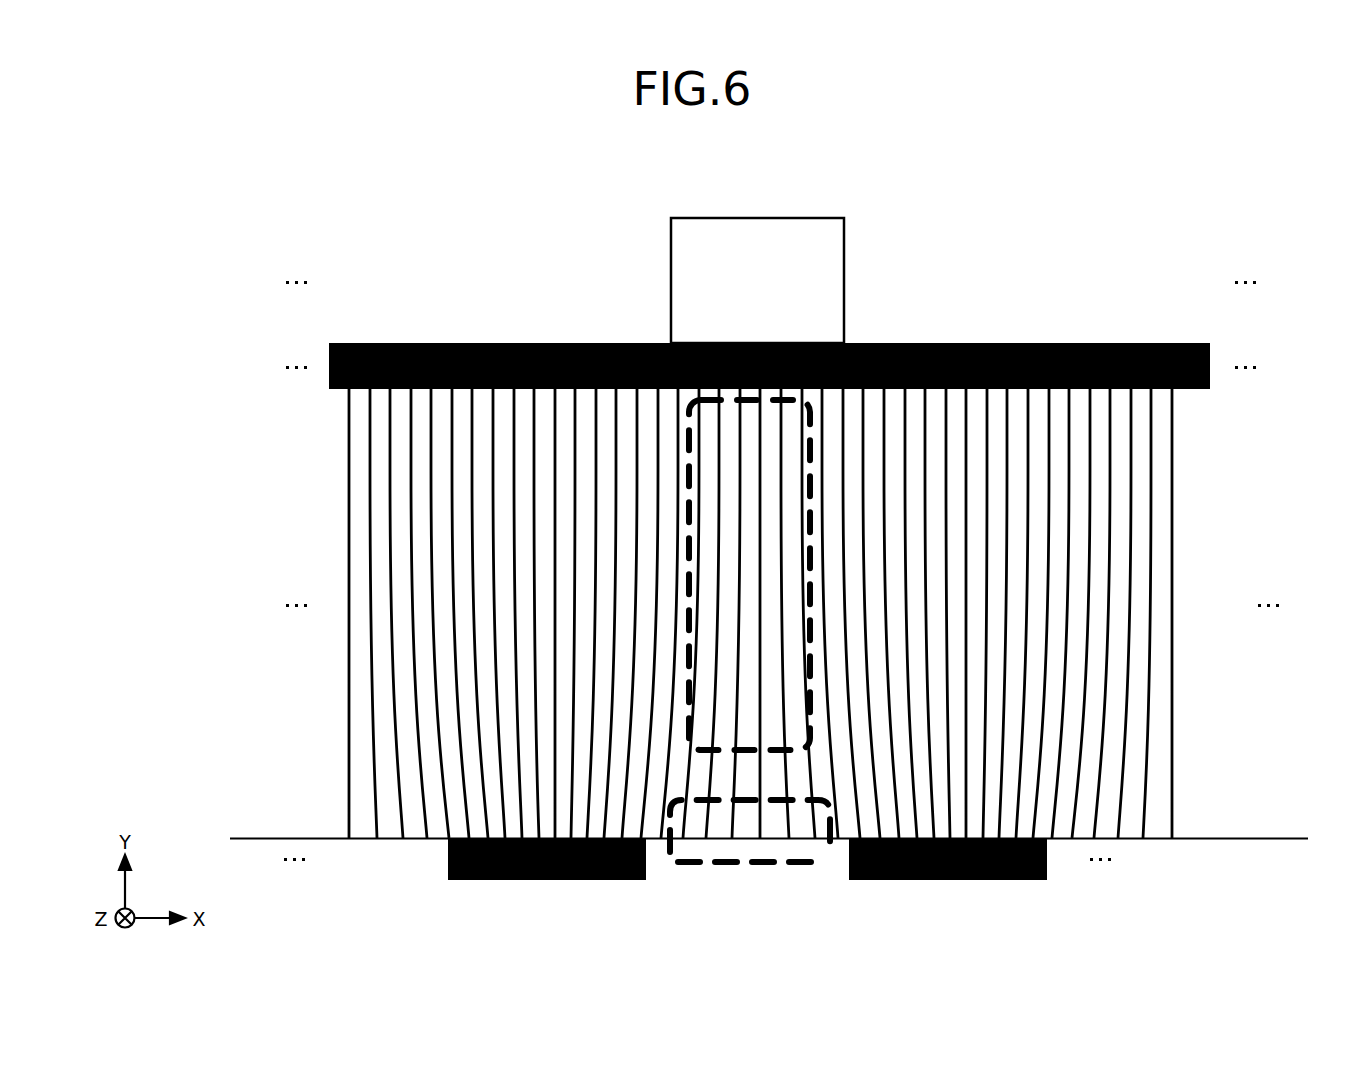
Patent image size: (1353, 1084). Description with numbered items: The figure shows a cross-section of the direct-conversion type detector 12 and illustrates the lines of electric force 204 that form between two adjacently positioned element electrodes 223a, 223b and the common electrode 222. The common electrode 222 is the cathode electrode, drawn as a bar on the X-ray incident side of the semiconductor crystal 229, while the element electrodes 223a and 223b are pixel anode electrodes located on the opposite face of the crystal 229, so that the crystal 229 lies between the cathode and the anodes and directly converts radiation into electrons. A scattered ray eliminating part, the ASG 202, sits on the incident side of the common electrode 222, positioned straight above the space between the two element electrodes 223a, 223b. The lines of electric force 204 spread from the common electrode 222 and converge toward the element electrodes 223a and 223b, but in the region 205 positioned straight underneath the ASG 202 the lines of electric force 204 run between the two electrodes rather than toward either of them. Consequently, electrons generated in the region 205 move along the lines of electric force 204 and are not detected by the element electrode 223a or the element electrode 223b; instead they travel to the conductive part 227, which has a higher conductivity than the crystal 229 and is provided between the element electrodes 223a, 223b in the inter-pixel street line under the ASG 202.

The direct-conversion type detector 12 is at (397, 205).
The scattered ray eliminating part (ASG) 202 is at (755, 218).
The common electrode 222 is at (1056, 343).
The element electrode 223a is at (547, 882).
The element electrode 223b is at (947, 882).
The lines of electric force 204 is at (712, 823).
The region 205 is at (793, 752).
The conductive part 227 is at (765, 862).
The crystal 229 is at (1272, 810).